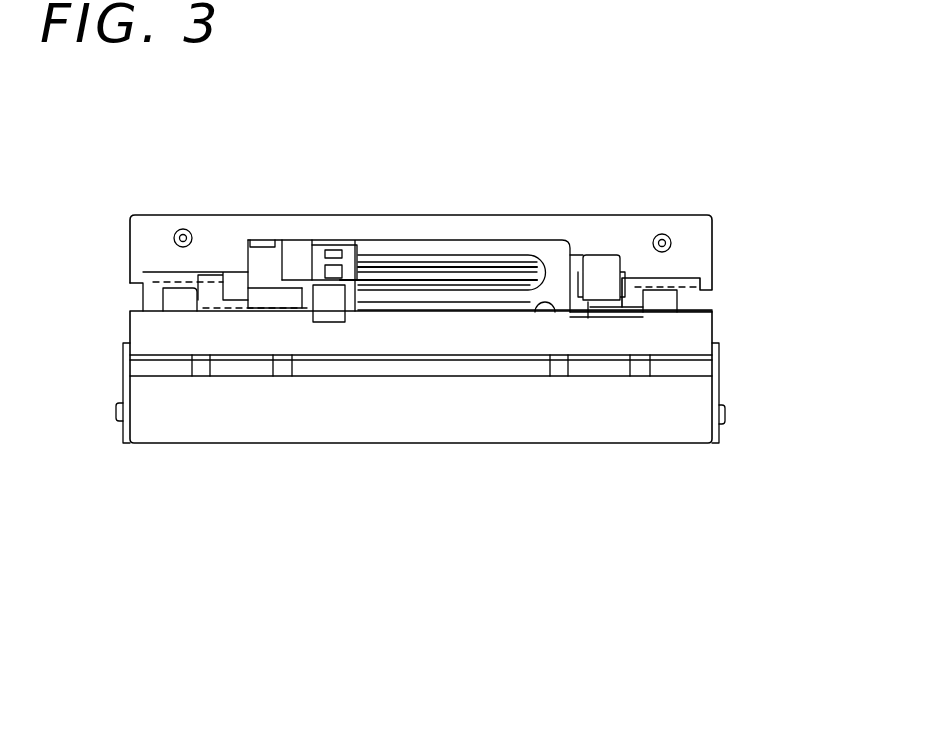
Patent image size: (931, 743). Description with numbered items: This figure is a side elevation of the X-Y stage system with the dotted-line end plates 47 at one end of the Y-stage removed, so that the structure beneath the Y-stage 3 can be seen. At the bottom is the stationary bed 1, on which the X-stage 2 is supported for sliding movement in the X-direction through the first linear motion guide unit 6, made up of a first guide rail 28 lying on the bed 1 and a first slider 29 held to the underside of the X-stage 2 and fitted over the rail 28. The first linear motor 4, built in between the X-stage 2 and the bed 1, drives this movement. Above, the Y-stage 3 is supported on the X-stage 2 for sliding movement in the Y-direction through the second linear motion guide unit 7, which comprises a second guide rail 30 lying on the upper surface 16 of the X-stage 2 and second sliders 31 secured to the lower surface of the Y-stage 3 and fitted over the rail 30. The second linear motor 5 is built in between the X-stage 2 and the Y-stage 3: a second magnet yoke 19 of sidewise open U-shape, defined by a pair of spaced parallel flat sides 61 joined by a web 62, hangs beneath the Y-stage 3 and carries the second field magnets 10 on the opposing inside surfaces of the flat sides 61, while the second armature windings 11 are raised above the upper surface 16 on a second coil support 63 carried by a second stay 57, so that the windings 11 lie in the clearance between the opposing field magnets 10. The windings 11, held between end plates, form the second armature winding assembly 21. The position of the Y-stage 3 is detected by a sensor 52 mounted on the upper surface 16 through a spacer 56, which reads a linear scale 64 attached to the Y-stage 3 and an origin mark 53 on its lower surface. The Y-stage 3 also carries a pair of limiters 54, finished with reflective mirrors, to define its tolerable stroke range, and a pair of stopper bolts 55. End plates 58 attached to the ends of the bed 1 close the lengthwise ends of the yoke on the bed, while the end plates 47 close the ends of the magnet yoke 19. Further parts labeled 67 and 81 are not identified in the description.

The stationary bed 1 is at (483, 427).
The X-stage 2 is at (600, 342).
The Y-stage 3 is at (610, 218).
The first linear motor 4 is at (497, 375).
The second linear motor 5 is at (463, 250).
The first linear motion guide unit 6 is at (240, 367).
The second linear motion guide unit 7 is at (207, 240).
The second field magnets 10 is at (515, 255).
The second armature windings 11 is at (437, 272).
The upper surface 16 is at (545, 305).
The second magnet yoke 19 is at (412, 247).
The second armature winding assembly 21 is at (460, 282).
The first guide rail 28 is at (304, 372).
The first slider 29 is at (220, 368).
The second guide rail 30 is at (178, 300).
The second slider 31 is at (165, 278).
The end plates 47 is at (286, 310).
The sensor 52 is at (302, 250).
The origin mark 53 is at (270, 258).
The limiters 54 is at (305, 244).
The stopper bolts 55 is at (603, 267).
The spacer 56 is at (278, 300).
The second stay 57 is at (333, 302).
The end plates 58 is at (125, 382).
The flat sides 61 is at (392, 247).
The web 62 is at (577, 254).
The second coil support 63 is at (412, 302).
The linear scale 64 is at (242, 256).
The projection 67 is at (119, 421).
The screw 81 is at (182, 228).